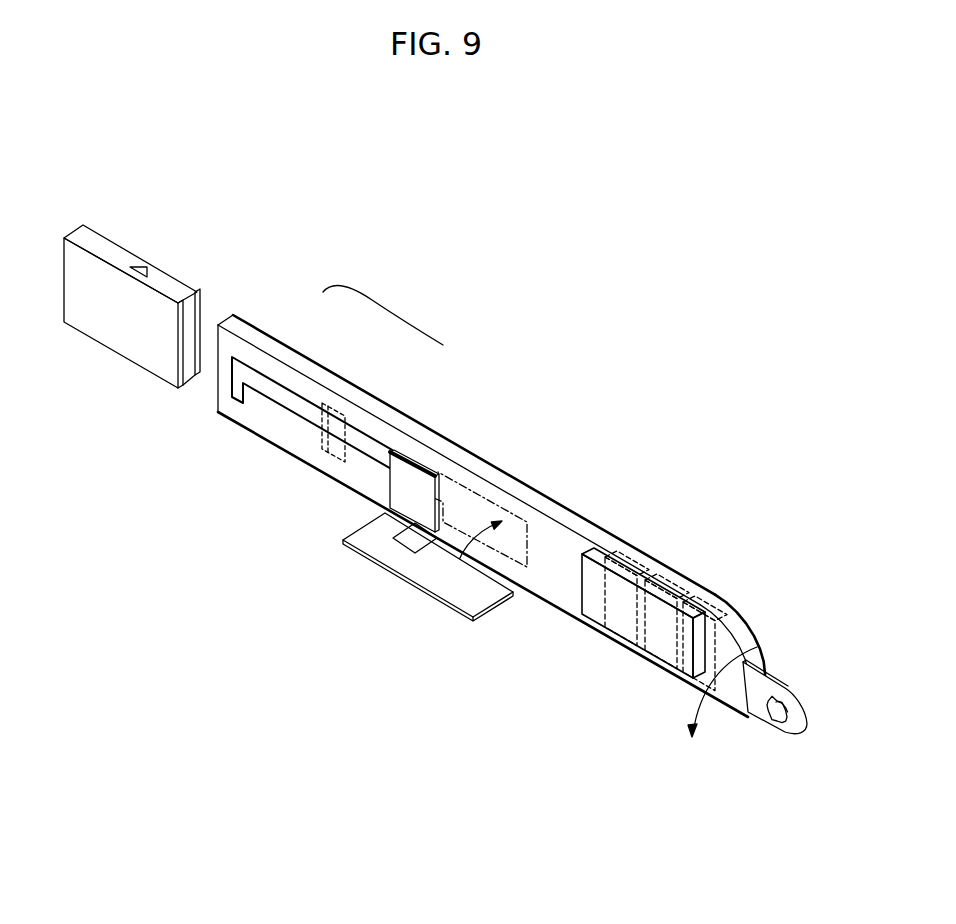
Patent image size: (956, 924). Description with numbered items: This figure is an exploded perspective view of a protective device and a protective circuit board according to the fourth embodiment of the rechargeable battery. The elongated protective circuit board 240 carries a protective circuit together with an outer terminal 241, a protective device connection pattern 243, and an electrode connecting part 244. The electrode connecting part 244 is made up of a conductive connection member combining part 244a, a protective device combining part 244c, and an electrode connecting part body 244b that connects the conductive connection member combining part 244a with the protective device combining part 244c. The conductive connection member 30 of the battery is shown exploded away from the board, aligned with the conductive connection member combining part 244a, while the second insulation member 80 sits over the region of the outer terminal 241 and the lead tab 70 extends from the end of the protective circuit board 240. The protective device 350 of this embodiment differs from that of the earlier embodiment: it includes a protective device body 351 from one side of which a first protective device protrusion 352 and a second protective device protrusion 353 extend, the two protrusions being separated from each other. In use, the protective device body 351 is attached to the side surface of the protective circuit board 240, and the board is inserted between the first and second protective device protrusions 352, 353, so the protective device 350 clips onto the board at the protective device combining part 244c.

The protective circuit board 240 is at (603, 497).
The outer terminal 241 is at (622, 568).
The protective device connection pattern 243 is at (318, 448).
The electrode connecting part 244 is at (383, 312).
The conductive connection member combining part 244a is at (406, 452).
The electrode connecting part body 244b is at (346, 374).
The protective device combining part 244c is at (297, 403).
The conductive connection member 30 is at (450, 592).
The second insulation member 80 is at (597, 617).
The lead tab 70 is at (761, 720).
The protective device 350 is at (143, 311).
The protective device body 351 is at (105, 242).
The first protective device protrusion 352 is at (183, 278).
The second protective device protrusion 353 is at (160, 372).